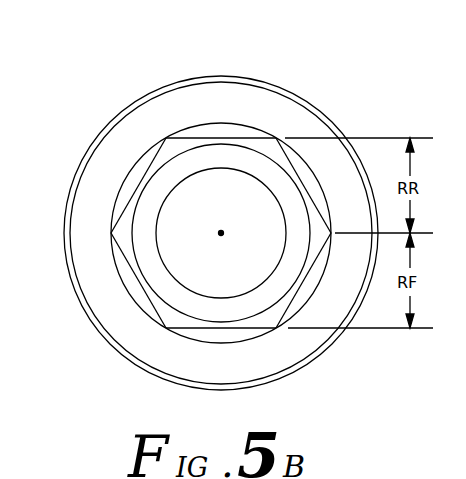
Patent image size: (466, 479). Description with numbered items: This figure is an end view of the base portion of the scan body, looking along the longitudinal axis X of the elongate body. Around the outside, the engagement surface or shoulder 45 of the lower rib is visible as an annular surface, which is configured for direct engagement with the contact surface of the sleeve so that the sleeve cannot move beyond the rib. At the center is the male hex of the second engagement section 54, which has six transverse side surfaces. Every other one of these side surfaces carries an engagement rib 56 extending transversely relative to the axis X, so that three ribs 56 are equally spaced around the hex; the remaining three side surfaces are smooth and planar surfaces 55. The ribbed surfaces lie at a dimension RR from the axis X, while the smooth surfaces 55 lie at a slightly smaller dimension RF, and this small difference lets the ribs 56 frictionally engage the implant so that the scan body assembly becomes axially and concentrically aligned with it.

The engagement surface or shoulder 45 is at (150, 122).
The second engagement section 54 is at (182, 347).
The smooth and planar surface 55 is at (137, 188).
The engagement rib 56 is at (223, 137).
The longitudinal axis X is at (221, 233).